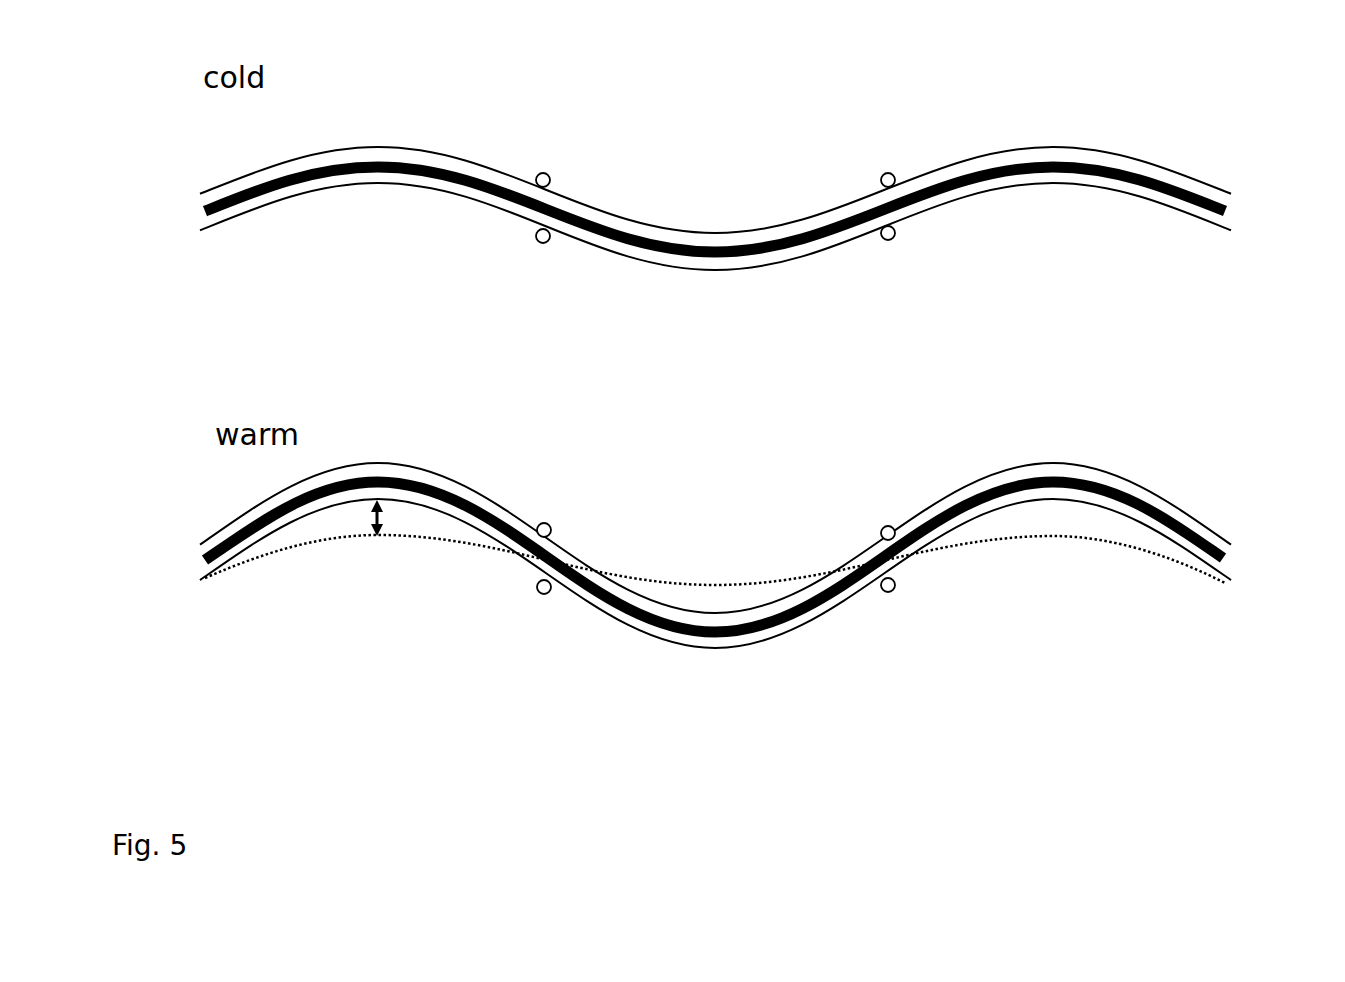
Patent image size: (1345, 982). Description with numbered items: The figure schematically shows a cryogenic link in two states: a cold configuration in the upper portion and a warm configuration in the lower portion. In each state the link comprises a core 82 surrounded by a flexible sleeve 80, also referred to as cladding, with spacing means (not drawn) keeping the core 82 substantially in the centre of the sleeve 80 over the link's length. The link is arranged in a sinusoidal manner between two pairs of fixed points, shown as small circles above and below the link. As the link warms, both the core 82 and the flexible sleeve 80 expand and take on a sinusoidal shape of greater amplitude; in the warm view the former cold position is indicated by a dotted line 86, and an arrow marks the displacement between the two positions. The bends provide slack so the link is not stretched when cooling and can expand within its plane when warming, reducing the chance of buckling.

The flexible sleeve 80 is at (1080, 142).
The core 82 is at (1223, 208).
The dotted line 86 is at (1053, 538).